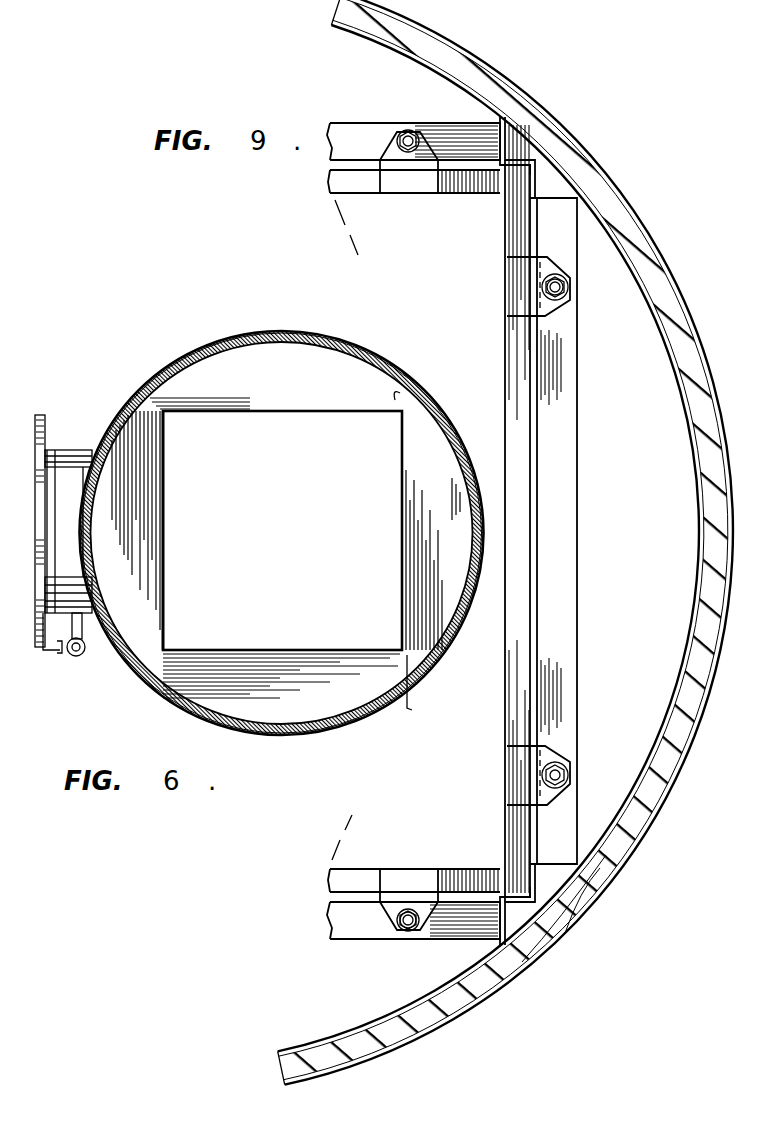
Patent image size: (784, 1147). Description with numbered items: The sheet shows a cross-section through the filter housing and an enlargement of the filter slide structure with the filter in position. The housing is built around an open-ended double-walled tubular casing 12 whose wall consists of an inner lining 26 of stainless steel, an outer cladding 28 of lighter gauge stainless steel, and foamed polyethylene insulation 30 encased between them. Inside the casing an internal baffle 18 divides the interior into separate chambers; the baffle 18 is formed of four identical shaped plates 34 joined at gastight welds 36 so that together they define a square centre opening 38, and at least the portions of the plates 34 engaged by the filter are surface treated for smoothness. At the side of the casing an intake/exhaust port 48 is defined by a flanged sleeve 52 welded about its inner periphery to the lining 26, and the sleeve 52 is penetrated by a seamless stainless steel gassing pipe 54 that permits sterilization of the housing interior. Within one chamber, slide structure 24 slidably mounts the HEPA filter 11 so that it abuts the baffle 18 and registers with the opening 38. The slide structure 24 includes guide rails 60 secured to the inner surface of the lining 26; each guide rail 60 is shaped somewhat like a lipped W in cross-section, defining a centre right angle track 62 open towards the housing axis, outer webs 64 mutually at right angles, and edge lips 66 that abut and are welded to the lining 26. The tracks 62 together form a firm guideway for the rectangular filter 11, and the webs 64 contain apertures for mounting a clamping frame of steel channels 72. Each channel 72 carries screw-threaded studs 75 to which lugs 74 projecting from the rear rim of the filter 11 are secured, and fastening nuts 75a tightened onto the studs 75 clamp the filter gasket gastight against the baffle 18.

In FIG. 9, the HEPA filter 11 is at (457, 185).
In FIG. 6, the tubular casing 12 is at (192, 340).
In FIG. 9, the tubular casing 12 is at (690, 778).
In FIG. 6, the internal baffle 18 is at (357, 385).
In FIG. 9, the slide structure 24 is at (525, 212).
In FIG. 6, the inner lining 26 is at (284, 333).
In FIG. 9, the inner lining 26 is at (642, 274).
In FIG. 6, the outer cladding 28 is at (256, 332).
In FIG. 9, the outer cladding 28 is at (641, 250).
In FIG. 6, the foamed polyethylene insulation 30 is at (224, 333).
In FIG. 9, the foamed polyethylene insulation 30 is at (632, 224).
In FIG. 6, the shaped plates 34 is at (281, 391).
In FIG. 6, the gastight welds 36 is at (402, 396).
In FIG. 6, the square centre opening 38 is at (166, 446).
In FIG. 6, the intake/exhaust port 48 is at (62, 438).
In FIG. 6, the flanged sleeve 52 is at (85, 450).
In FIG. 6, the gassing pipe 54 is at (86, 628).
In FIG. 9, the guide rail 60 is at (523, 152).
In FIG. 9, the right angle track 62 is at (533, 172).
In FIG. 9, the outer web 64 is at (598, 871).
In FIG. 9, the edge lip 66 is at (604, 857).
In FIG. 9, the steel channel 72 is at (352, 122).
In FIG. 9, the lug 74 is at (405, 182).
In FIG. 9, the screw-threaded stud 75 is at (407, 130).
In FIG. 9, the fastening nut 75a is at (545, 292).